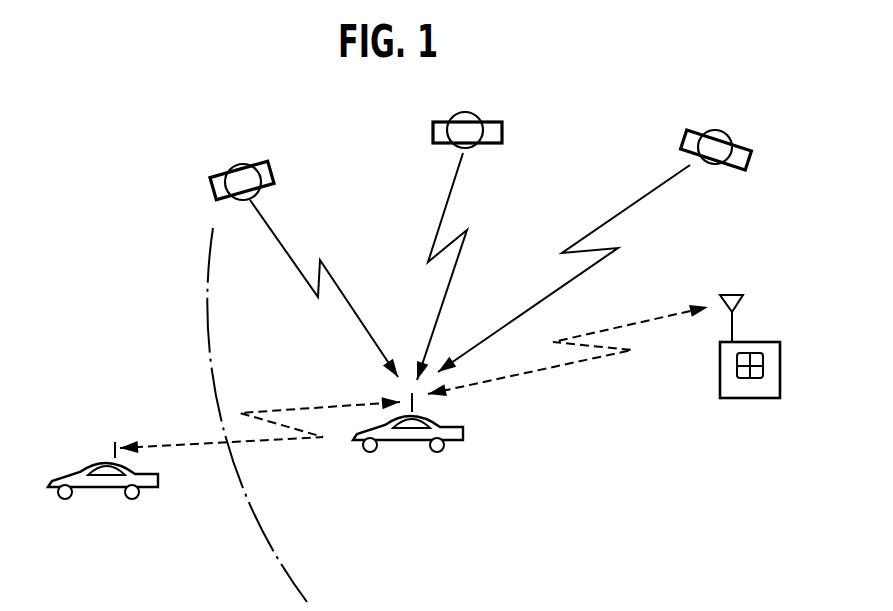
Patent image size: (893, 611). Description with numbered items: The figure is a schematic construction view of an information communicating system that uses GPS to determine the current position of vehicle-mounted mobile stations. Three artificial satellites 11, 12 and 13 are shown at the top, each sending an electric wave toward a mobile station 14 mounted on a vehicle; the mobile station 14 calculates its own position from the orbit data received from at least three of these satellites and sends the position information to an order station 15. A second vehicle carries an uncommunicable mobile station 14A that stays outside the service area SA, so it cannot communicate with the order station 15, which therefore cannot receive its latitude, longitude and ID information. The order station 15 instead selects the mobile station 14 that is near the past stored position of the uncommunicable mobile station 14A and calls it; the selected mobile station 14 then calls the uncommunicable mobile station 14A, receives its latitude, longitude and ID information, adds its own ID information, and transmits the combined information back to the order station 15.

The artificial satellite 11 is at (275, 168).
The artificial satellite 12 is at (490, 143).
The artificial satellite 13 is at (752, 163).
The mobile station 14 is at (400, 442).
The uncommunicable mobile station 14A is at (100, 488).
The order station 15 is at (780, 365).
The service area boundary SA is at (272, 545).